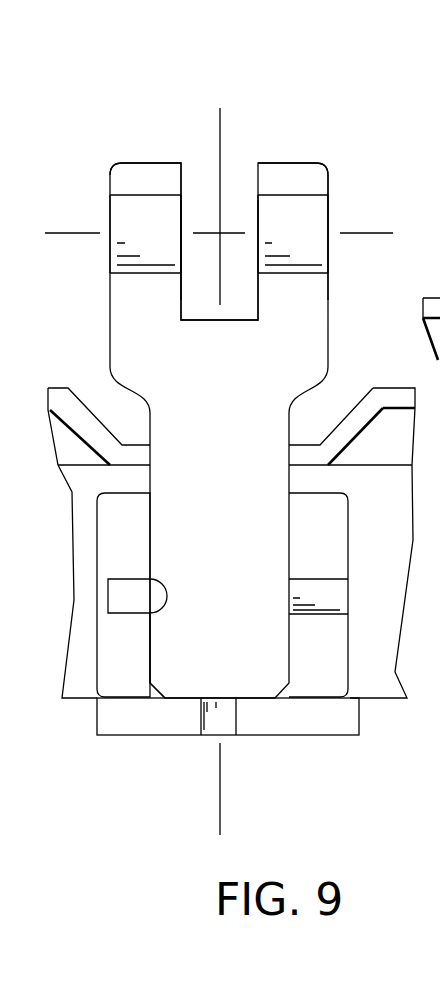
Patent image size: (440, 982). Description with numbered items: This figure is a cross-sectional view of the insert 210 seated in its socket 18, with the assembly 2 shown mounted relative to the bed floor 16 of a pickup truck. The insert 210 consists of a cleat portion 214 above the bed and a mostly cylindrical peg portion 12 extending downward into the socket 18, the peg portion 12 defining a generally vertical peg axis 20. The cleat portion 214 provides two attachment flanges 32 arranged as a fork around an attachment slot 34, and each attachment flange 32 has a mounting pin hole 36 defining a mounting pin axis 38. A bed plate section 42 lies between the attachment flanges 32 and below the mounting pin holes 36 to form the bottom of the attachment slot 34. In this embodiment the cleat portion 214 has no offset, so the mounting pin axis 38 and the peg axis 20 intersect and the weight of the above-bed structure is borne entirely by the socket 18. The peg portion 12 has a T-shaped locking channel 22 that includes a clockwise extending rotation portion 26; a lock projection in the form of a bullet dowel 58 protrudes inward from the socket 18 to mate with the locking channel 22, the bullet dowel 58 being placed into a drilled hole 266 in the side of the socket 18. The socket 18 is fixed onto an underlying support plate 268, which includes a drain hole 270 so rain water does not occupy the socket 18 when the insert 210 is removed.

The connector assembly 2 is at (48, 543).
The peg portion 12 is at (290, 430).
The bed floor 16 is at (97, 423).
The socket 18 is at (346, 525).
The peg axis 20 is at (221, 136).
The locking channel 22 is at (167, 605).
The rotation portion 26 is at (337, 588).
The attachment flanges 32 is at (122, 290).
The attachment slot 34 is at (200, 185).
The mounting pin hole 36 is at (118, 207).
The mounting pin axis 38 is at (373, 233).
The bed plate section 42 is at (258, 345).
The bullet dowel 58 is at (130, 590).
The insert 210 is at (289, 162).
The cleat portion 214 is at (130, 162).
The drilled hole 266 is at (108, 598).
The support plate 268 is at (170, 726).
The drain hole 270 is at (227, 727).